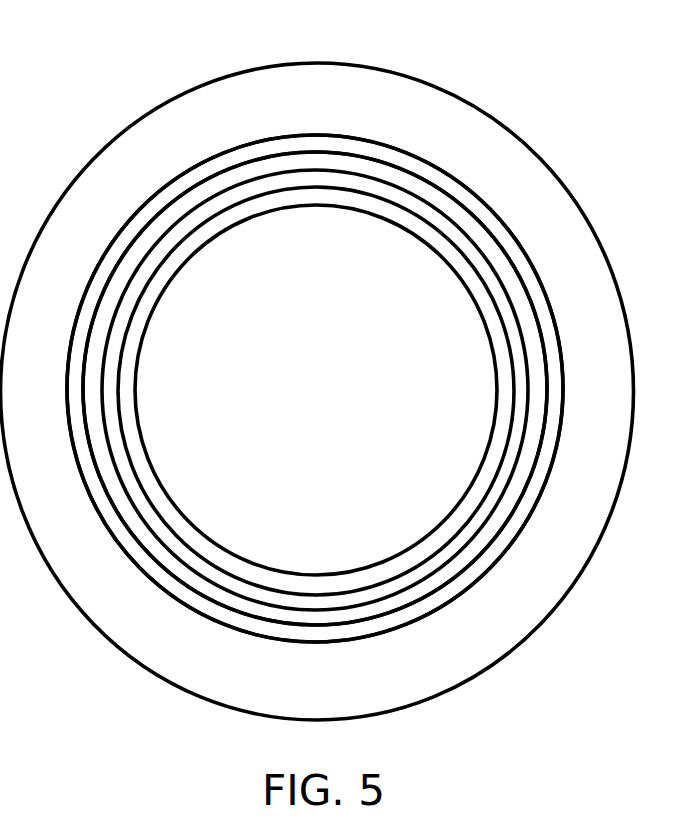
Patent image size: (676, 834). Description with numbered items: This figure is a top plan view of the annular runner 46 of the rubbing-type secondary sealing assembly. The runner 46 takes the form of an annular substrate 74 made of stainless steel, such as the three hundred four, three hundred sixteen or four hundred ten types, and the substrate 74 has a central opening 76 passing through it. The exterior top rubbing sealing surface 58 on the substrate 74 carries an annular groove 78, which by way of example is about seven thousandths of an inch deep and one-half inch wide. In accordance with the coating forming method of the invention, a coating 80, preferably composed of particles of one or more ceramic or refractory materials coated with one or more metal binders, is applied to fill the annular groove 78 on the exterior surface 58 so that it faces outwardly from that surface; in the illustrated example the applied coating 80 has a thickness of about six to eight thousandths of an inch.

The annular runner 46 is at (438, 83).
The annular substrate 74 is at (207, 95).
The annular groove 78 is at (163, 212).
The coating 80 is at (357, 163).
The exterior top rubbing sealing surface 58 is at (477, 200).
The central opening 76 is at (142, 358).